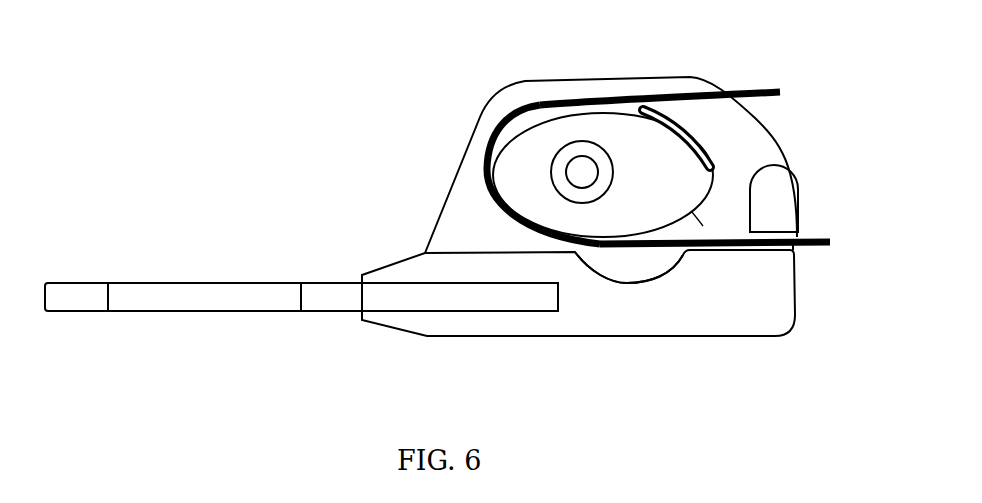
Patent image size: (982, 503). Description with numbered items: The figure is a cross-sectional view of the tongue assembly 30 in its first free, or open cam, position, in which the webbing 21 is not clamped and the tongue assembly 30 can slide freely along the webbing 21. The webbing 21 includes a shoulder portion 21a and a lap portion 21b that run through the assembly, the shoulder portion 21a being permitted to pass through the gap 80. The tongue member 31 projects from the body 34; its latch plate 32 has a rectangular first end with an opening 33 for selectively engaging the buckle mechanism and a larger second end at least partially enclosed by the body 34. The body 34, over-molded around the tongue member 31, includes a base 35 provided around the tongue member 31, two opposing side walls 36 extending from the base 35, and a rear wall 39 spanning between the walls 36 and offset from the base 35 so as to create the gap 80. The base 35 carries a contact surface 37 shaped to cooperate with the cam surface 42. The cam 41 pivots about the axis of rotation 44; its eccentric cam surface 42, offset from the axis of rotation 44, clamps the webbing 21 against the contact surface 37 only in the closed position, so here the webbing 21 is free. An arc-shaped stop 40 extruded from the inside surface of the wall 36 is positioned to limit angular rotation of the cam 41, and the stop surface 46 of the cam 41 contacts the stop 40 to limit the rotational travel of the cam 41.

The tongue assembly 30 is at (254, 66).
The webbing 21 is at (511, 96).
The shoulder portion 21a is at (812, 235).
The lap portion 21b is at (740, 88).
The tongue member 31 is at (80, 323).
The latch plate 32 is at (323, 305).
The opening 33 is at (184, 263).
The body 34 is at (699, 350).
The base 35 is at (603, 322).
The side wall 36 is at (462, 167).
The contact surface 37 is at (625, 285).
The rear wall 39 is at (781, 207).
The stop 40 is at (688, 137).
The cam 41 is at (718, 189).
The cam surface 42 is at (692, 212).
The axis of rotation 44 is at (578, 167).
The stop surface 46 is at (683, 152).
The gap 80 is at (807, 254).